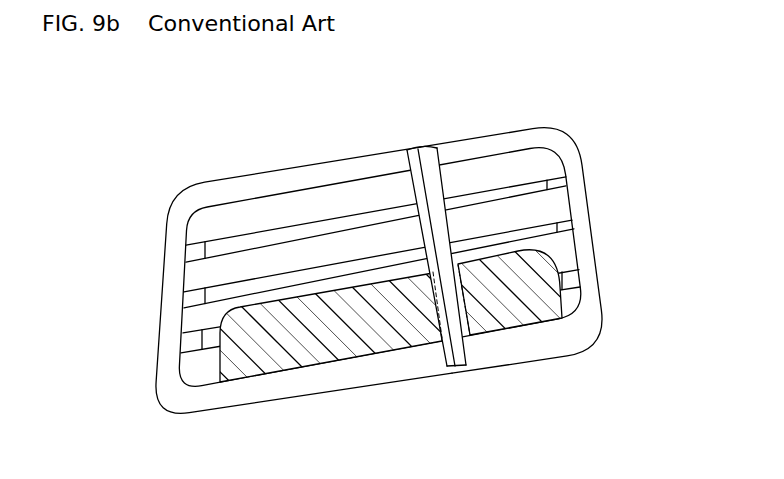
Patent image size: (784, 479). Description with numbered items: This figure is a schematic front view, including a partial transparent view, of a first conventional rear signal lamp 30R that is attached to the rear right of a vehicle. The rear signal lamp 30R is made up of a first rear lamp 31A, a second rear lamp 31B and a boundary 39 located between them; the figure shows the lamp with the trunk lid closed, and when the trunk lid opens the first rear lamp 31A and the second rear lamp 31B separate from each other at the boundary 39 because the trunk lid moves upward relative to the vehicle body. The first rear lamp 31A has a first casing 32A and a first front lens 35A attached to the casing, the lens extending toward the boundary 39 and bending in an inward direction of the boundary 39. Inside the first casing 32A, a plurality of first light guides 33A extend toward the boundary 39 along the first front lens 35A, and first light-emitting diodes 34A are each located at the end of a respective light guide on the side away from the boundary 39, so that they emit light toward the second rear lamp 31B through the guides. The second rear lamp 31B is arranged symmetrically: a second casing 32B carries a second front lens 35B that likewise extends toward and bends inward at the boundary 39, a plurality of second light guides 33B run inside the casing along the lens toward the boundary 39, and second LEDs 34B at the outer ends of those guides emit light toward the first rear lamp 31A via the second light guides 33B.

The rear signal lamp 30R is at (381, 245).
The first rear lamp 31A is at (205, 222).
The second rear lamp 31B is at (512, 162).
The first casing 32A is at (167, 322).
The second casing 32B is at (587, 273).
The first light guides 33A is at (193, 257).
The second light guides 33B is at (528, 184).
The first light-emitting diodes 34A is at (223, 249).
The second LEDs 34B is at (563, 222).
The first front lens 35A is at (260, 362).
The second front lens 35B is at (497, 325).
The boundary 39 is at (459, 368).